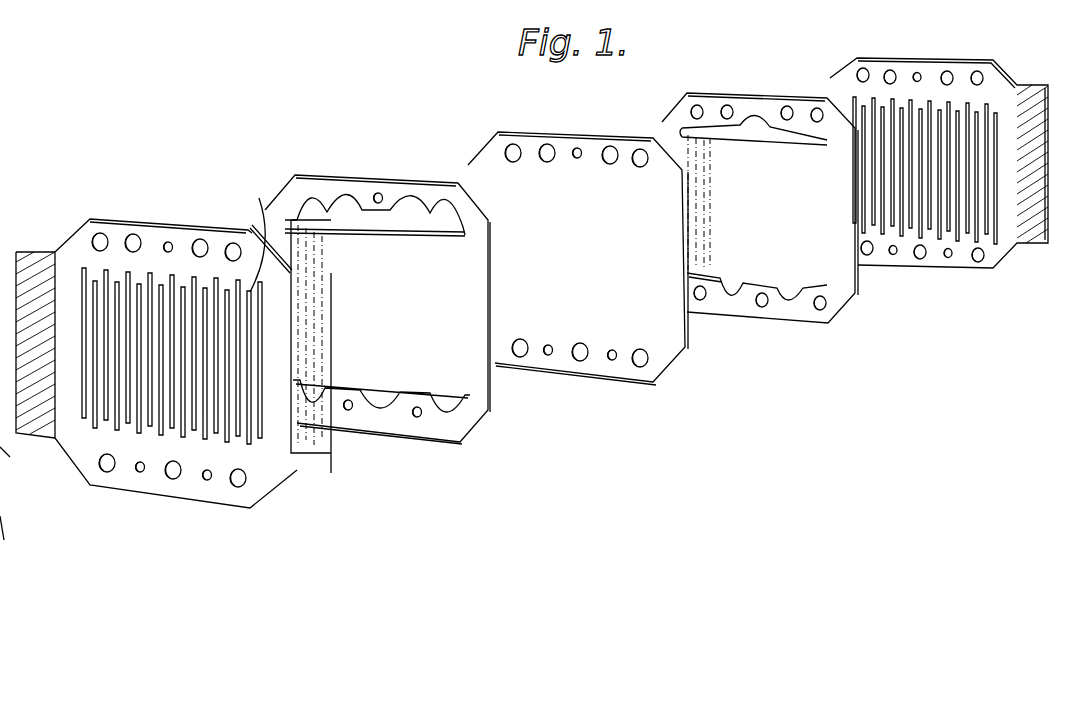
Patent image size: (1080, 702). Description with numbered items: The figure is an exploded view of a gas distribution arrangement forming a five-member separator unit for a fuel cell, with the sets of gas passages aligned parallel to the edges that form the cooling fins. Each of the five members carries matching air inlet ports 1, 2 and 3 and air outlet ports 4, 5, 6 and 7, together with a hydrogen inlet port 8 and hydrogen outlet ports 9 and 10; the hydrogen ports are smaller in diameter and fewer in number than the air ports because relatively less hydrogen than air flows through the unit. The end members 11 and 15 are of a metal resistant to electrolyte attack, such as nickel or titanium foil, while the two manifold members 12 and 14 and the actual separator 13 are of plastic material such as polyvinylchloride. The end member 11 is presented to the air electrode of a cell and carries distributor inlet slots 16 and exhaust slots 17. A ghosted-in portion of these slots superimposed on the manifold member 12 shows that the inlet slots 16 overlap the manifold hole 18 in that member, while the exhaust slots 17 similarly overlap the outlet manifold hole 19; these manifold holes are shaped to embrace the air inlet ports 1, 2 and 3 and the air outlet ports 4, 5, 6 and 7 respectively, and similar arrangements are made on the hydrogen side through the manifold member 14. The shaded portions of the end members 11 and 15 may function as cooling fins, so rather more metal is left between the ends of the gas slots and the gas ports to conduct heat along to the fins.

The air inlet port 1 is at (109, 470).
The air inlet port 2 is at (173, 478).
The air inlet port 3 is at (244, 486).
The air outlet port 4 is at (866, 72).
The air outlet port 5 is at (893, 74).
The air outlet port 6 is at (949, 74).
The air outlet port 7 is at (979, 76).
The hydrogen inlet port 8 is at (381, 196).
The hydrogen outlet port 9 is at (350, 411).
The hydrogen outlet port 10 is at (418, 418).
The end member 11 is at (160, 359).
The manifold member 12 is at (360, 308).
The separator 13 is at (578, 236).
The manifold member 14 is at (697, 97).
The end member 15 is at (924, 148).
The distributor inlet slots 16 is at (95, 430).
The exhaust slots 17 is at (264, 234).
The manifold hole 18 is at (320, 389).
The outlet manifold hole 19 is at (438, 231).